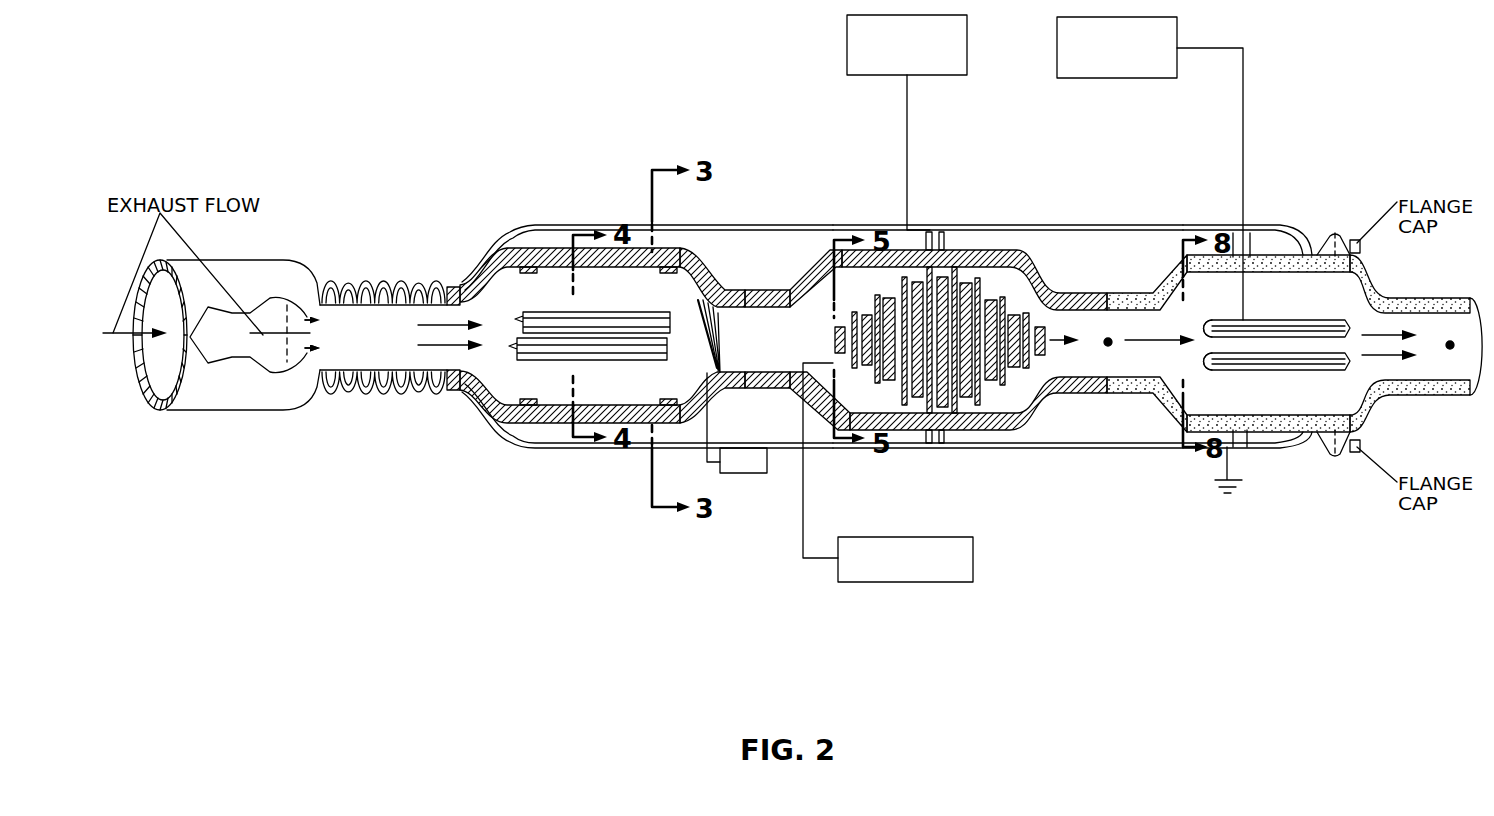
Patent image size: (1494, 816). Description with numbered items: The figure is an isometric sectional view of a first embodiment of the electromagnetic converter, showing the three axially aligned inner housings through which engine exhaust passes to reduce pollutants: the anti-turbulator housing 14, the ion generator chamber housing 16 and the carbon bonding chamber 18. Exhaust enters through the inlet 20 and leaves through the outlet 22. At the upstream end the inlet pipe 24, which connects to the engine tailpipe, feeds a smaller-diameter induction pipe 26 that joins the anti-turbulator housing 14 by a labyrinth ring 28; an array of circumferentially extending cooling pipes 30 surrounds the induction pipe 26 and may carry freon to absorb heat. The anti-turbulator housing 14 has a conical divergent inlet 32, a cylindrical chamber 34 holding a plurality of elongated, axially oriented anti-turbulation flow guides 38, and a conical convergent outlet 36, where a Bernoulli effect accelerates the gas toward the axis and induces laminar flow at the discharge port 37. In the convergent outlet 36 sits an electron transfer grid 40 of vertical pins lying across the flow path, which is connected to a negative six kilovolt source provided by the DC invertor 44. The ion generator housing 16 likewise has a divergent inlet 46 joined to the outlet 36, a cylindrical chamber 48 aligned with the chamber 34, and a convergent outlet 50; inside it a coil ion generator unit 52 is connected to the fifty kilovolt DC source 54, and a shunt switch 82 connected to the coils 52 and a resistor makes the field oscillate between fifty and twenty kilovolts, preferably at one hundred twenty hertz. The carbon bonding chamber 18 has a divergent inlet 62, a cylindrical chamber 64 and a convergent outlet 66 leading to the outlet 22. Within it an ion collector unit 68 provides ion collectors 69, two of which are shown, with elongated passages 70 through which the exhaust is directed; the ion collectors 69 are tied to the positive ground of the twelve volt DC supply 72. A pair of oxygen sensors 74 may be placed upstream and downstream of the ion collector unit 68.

The anti-turbulator housing 14 is at (545, 437).
The ion generator chamber housing 16 is at (991, 242).
The carbon bonding chamber 18 is at (1268, 433).
The inlet 20 is at (140, 397).
The outlet 22 is at (1470, 378).
The inlet pipe 24 is at (243, 410).
The induction pipe 26 is at (333, 282).
The labyrinth ring 28 is at (453, 287).
The cooling pipes 30 is at (380, 397).
The conical shape divergent inlet 32 is at (493, 390).
The cylindrical chamber 34 is at (564, 268).
The conical shape convergent outlet 36 is at (688, 273).
The discharge port 37 is at (742, 305).
The anti-turbulation flow guides 38 is at (547, 312).
The electron transfer grid 40 is at (720, 357).
The DC invertor 44 is at (781, 473).
The conical shape divergent inlet 46 is at (787, 372).
The cylindrical chamber 48 is at (868, 266).
The conical shape convergent outlet 50 is at (1038, 386).
The coil ion generator unit 52 is at (965, 397).
The 50 KV DC source 54 is at (845, 40).
The conical shaped divergent inlet 62 is at (1167, 413).
The cylindrical chamber 64 is at (1242, 417).
The conical shape convergent outlet 66 is at (1383, 412).
The ion collector unit 68 is at (1291, 387).
The ion collectors 69 is at (1278, 353).
The elongated passages 70 is at (1208, 327).
The 12 volt DC supply 72 is at (1055, 43).
The oxygen sensors 74 is at (1112, 345).
The shunt switch 82 is at (837, 573).